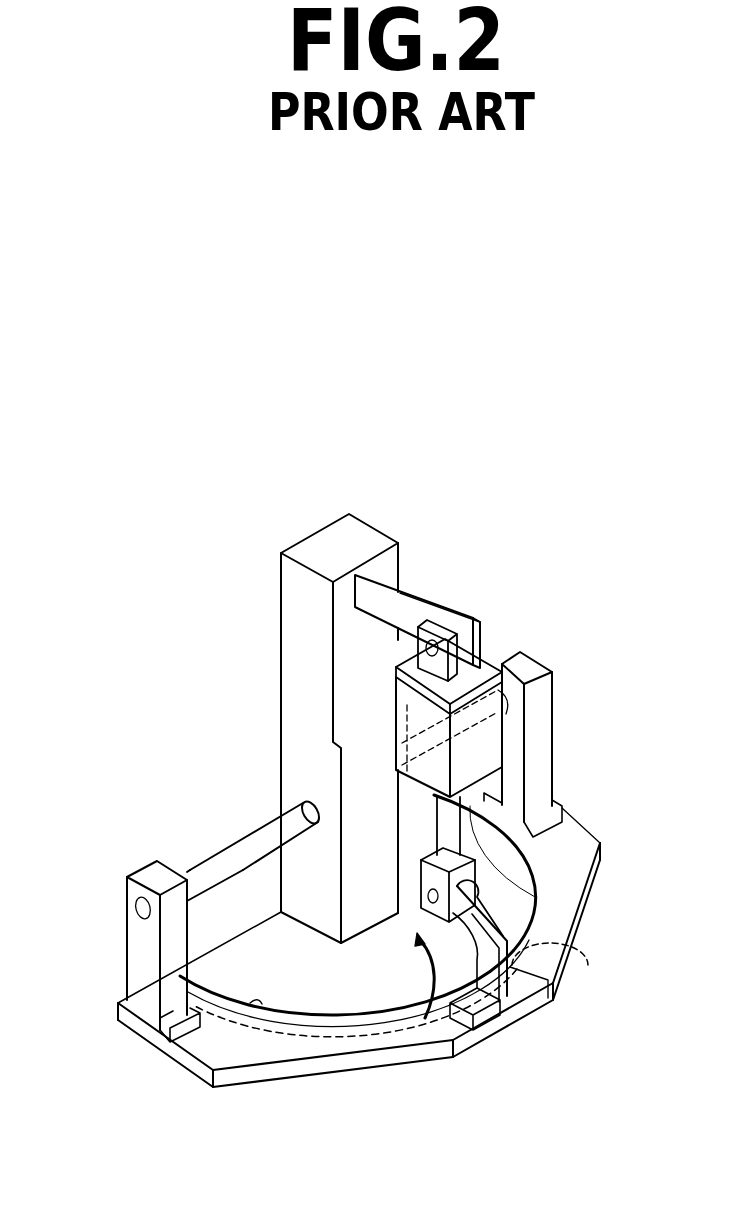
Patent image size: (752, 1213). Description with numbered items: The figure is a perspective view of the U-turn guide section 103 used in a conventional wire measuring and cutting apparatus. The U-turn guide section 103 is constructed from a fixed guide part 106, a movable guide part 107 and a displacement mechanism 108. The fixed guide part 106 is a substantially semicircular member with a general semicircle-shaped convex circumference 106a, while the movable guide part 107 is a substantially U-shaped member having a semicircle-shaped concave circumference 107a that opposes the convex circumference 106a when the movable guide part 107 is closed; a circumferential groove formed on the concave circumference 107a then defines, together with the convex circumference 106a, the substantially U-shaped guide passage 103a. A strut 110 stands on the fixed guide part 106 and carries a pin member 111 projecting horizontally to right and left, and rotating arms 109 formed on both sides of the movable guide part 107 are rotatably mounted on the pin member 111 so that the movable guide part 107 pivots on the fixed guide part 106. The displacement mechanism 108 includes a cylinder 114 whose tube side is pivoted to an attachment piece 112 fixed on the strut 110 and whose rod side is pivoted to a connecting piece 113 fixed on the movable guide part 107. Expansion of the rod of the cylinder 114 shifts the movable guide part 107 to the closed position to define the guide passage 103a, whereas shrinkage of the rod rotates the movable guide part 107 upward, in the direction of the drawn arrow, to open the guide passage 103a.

The U-turn guide section 103 is at (470, 555).
The guide passage 103a is at (576, 962).
The fixed guide part 106 is at (357, 997).
The convex circumference 106a is at (310, 1022).
The movable guide part 107 is at (468, 1036).
The concave circumference 107a is at (258, 1008).
The displacement mechanism 108 is at (550, 876).
The rotating arms 109 is at (550, 708).
The strut 110 is at (290, 703).
The pin member 111 is at (227, 852).
The attachment piece 112 is at (465, 608).
The connecting piece 113 is at (512, 972).
The cylinder 114 is at (505, 765).